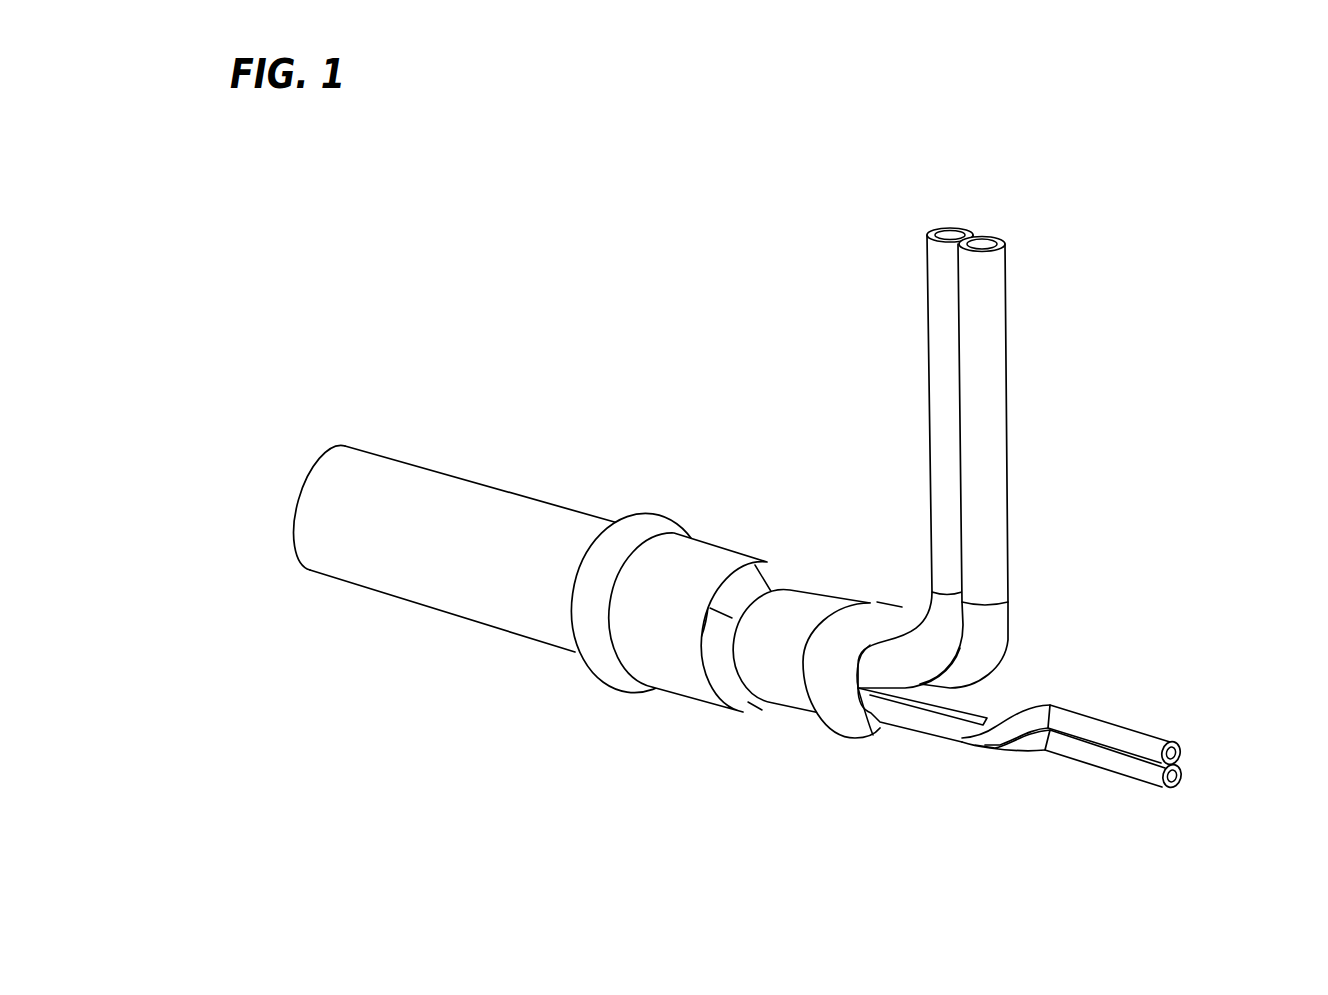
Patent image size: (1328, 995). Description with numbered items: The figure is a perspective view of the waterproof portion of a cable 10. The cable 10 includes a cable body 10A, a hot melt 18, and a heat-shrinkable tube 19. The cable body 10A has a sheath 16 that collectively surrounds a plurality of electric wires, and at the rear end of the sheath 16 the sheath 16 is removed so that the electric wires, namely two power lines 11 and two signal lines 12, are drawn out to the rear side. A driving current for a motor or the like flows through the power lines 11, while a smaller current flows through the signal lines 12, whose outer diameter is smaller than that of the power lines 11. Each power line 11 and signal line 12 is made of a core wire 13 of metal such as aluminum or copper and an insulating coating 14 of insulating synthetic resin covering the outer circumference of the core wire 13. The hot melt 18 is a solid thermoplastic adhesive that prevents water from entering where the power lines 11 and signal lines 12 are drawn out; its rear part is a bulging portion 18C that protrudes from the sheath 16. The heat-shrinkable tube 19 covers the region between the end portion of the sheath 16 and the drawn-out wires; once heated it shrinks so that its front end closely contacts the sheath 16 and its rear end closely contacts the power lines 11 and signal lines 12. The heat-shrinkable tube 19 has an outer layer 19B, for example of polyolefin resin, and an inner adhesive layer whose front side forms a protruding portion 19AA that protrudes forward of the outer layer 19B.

The cable 10 is at (720, 351).
The cable body 10A is at (489, 477).
The sheath 16 is at (555, 522).
The heat-shrinkable tube 19 is at (698, 567).
The protruding portion 19AA is at (648, 523).
The outer layer 19B is at (788, 617).
The hot melt 18 is at (860, 600).
The bulging portion 18C is at (872, 630).
The power line 11 is at (968, 166).
The signal line 12 is at (1250, 707).
The core wire 13 is at (950, 232).
The insulating coating 14 is at (930, 229).